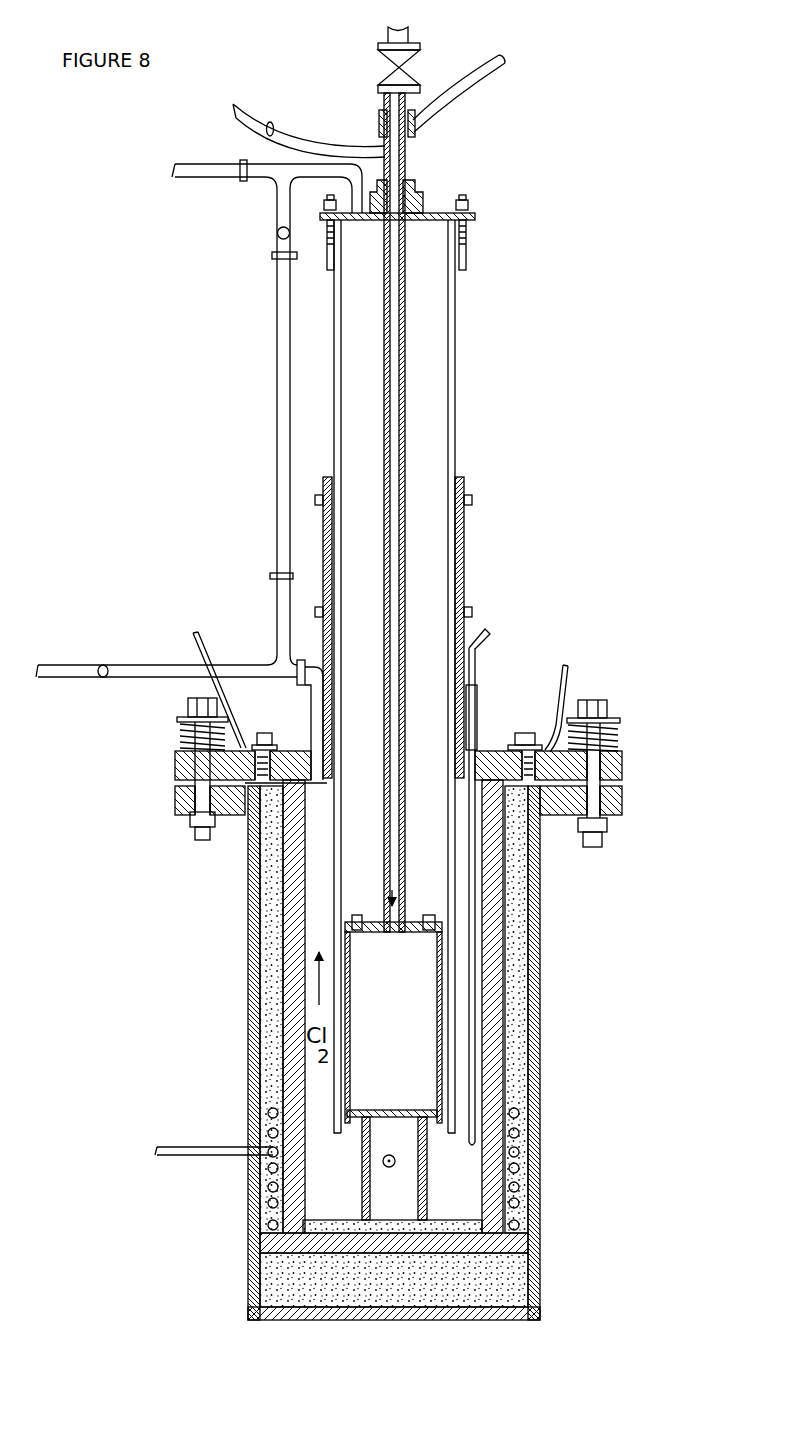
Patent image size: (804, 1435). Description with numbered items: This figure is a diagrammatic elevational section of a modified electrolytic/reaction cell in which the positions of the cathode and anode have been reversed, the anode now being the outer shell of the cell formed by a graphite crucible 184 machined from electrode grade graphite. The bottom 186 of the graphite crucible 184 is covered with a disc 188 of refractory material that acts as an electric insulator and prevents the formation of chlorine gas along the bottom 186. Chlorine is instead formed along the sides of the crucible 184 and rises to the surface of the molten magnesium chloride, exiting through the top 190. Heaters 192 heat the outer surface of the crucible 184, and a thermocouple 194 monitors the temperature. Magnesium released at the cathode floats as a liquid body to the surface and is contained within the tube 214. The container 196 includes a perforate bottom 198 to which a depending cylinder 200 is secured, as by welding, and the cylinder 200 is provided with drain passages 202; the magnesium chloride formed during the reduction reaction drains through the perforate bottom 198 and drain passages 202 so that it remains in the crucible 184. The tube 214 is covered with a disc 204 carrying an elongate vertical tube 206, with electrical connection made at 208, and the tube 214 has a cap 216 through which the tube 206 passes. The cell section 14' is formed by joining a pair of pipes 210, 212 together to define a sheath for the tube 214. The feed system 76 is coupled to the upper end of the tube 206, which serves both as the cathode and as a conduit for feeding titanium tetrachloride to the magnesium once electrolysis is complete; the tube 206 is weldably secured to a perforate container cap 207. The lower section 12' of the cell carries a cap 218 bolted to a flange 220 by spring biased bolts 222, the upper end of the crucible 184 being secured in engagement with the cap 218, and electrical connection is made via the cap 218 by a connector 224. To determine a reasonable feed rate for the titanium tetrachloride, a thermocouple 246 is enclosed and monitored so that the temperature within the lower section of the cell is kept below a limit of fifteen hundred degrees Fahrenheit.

The feed system 76 is at (427, 61).
The electrical connection 208 is at (412, 130).
The cap 216 is at (410, 183).
The disc 204 is at (435, 213).
The elongate vertical tube 206 is at (410, 322).
The tube 214 is at (438, 372).
The cell section 14' is at (421, 676).
The pipe 210 is at (465, 553).
The pipe 212 is at (458, 643).
The thermocouple 246 is at (474, 673).
The cap 218 is at (493, 752).
The connector 224 is at (538, 735).
The spring biased bolts 222 is at (606, 707).
The flange 220 is at (622, 803).
The lower section 12' is at (426, 1053).
The graphite crucible 184 is at (290, 938).
The top 190 is at (308, 783).
The bottom 186 is at (488, 1253).
The disc 188 is at (473, 1220).
The heaters 192 is at (273, 1108).
The thermocouple 194 is at (160, 1147).
The perforate container cap 207 is at (412, 928).
The container 196 is at (348, 1002).
The perforate bottom 198 is at (383, 1103).
The depending cylinder 200 is at (364, 1135).
The drain passages 202 is at (364, 1177).